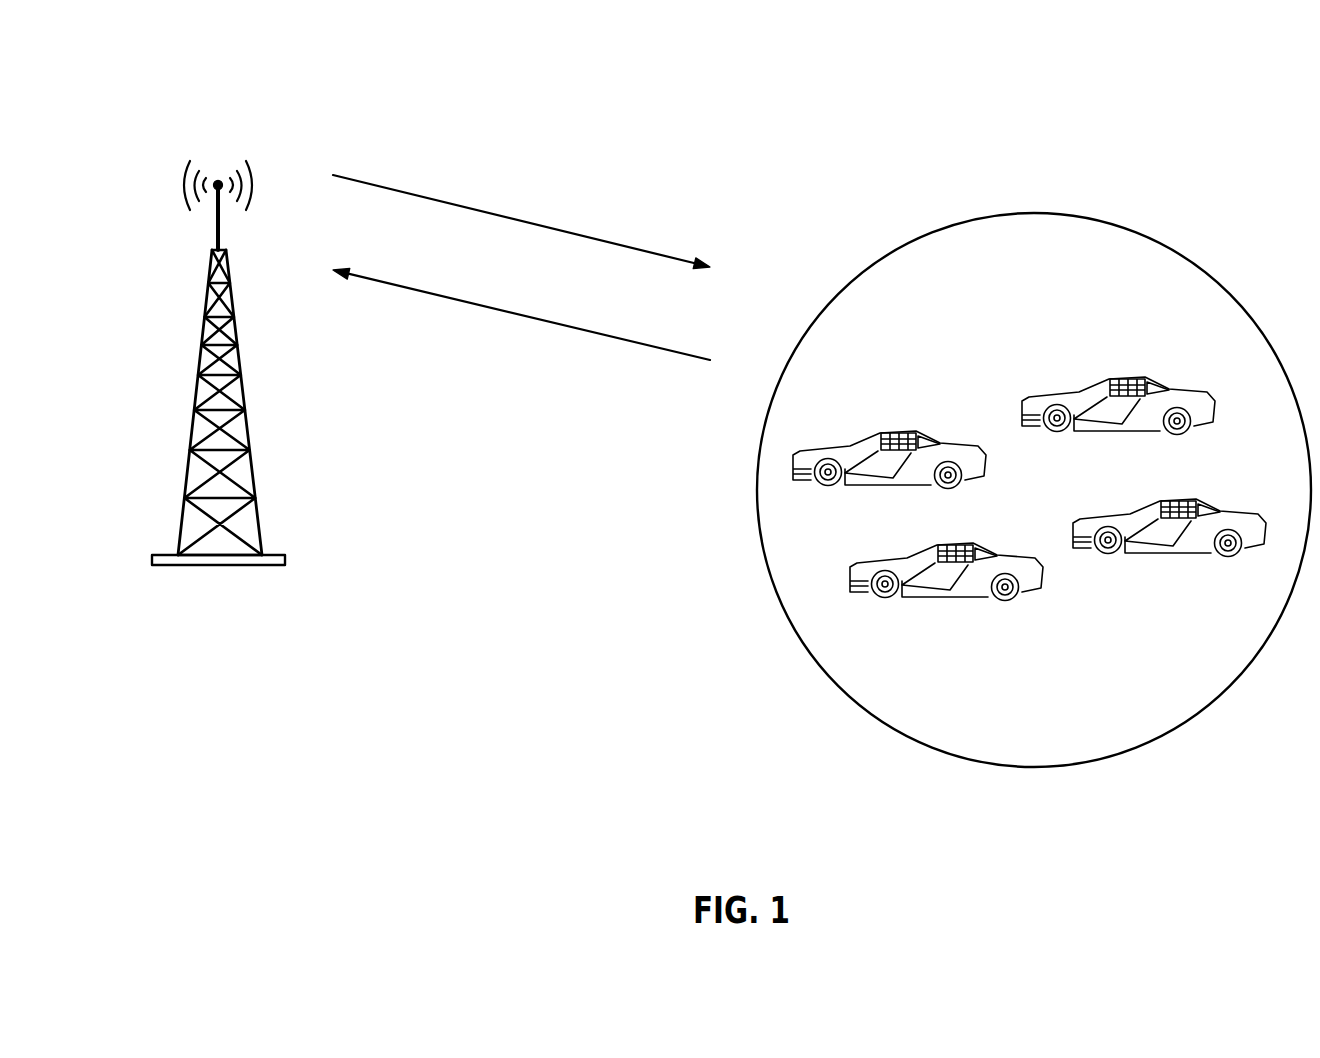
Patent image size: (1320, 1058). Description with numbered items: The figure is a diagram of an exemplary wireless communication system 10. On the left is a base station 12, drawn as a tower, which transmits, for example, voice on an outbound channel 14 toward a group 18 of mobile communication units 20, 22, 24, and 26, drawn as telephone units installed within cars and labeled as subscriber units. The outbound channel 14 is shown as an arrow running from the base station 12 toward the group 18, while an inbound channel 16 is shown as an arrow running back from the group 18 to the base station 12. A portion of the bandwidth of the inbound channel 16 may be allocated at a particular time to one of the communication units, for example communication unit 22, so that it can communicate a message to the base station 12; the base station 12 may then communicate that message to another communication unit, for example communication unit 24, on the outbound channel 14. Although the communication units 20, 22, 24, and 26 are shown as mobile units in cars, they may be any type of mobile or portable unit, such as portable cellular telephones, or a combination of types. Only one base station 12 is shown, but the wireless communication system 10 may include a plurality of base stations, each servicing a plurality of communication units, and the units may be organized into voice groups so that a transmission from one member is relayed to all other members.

The wireless communication system 10 is at (185, 88).
The base station 12 is at (195, 410).
The outbound channel 14 is at (613, 240).
The inbound channel 16 is at (420, 292).
The group of mobile communication units 18 is at (1033, 213).
The mobile communication unit 20 is at (1110, 433).
The mobile communication unit 22 is at (883, 485).
The mobile communication unit 24 is at (940, 600).
The mobile communication unit 26 is at (1165, 558).